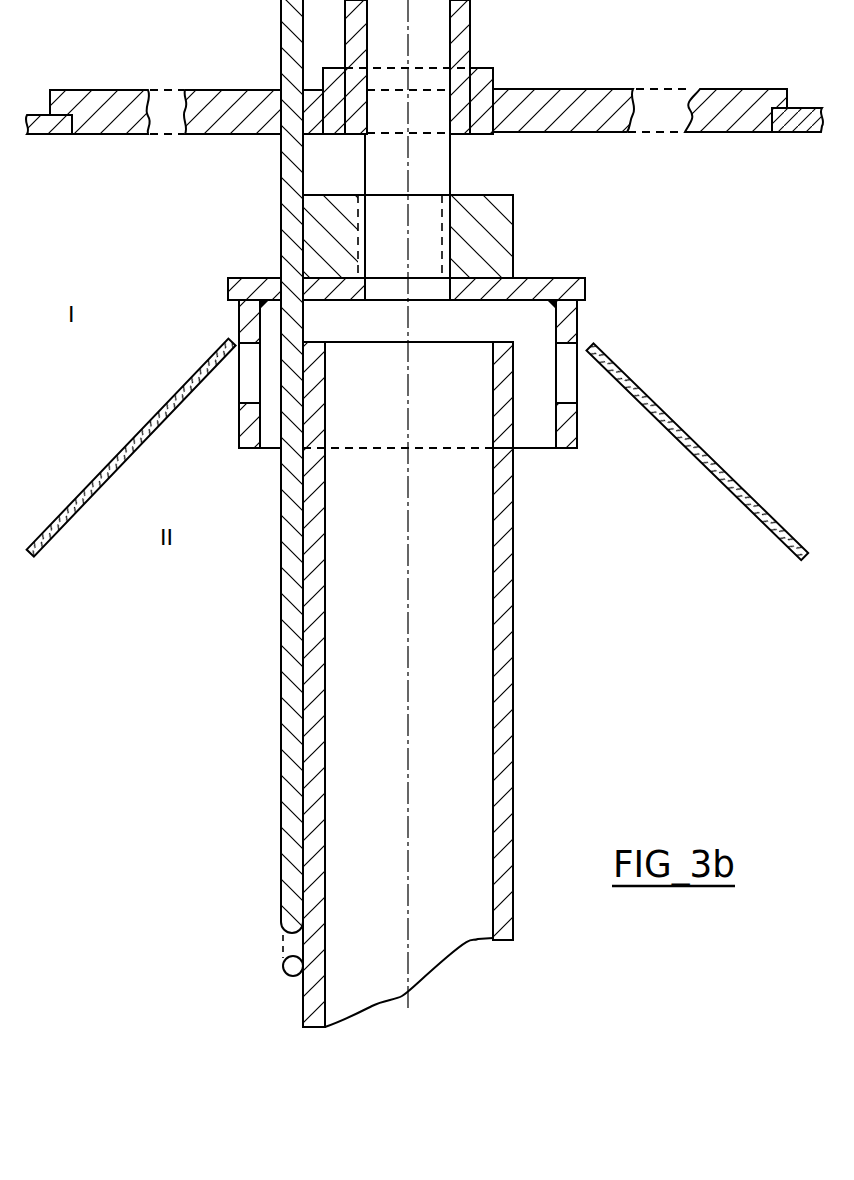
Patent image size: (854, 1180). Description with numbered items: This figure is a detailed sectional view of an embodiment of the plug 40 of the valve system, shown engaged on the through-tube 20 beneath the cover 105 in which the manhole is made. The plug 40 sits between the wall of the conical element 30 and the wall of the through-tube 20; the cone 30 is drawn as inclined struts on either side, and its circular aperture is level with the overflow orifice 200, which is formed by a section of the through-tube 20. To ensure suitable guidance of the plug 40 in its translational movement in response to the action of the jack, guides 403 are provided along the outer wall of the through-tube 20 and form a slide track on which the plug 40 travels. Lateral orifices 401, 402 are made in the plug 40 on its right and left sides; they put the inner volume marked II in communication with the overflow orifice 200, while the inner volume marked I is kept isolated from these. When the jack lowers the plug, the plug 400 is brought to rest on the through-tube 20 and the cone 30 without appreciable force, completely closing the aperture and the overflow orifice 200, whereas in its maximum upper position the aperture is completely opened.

The cover 105 is at (222, 104).
The guides 403 is at (282, 215).
The plug 40 is at (515, 274).
The plug 400 is at (586, 298).
The overflow orifice 200 is at (480, 338).
The lateral orifice 401 is at (570, 392).
The lateral orifice 402 is at (239, 385).
The cone 30 is at (705, 458).
The through-tube 20 is at (513, 668).